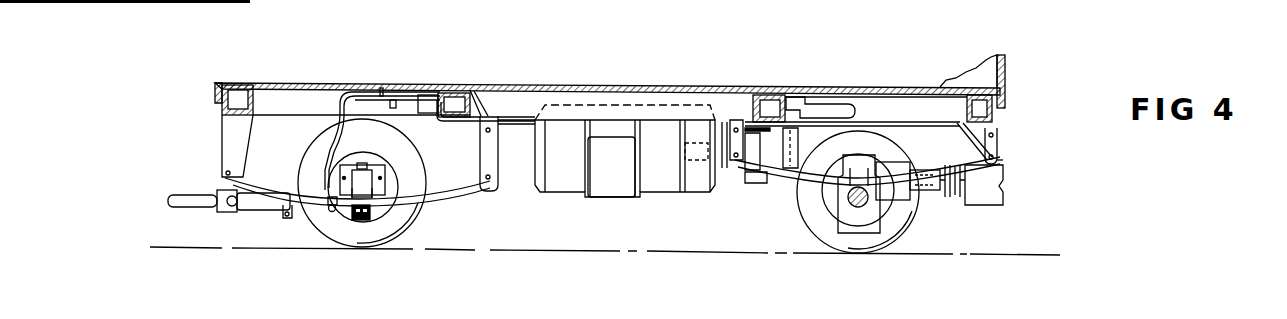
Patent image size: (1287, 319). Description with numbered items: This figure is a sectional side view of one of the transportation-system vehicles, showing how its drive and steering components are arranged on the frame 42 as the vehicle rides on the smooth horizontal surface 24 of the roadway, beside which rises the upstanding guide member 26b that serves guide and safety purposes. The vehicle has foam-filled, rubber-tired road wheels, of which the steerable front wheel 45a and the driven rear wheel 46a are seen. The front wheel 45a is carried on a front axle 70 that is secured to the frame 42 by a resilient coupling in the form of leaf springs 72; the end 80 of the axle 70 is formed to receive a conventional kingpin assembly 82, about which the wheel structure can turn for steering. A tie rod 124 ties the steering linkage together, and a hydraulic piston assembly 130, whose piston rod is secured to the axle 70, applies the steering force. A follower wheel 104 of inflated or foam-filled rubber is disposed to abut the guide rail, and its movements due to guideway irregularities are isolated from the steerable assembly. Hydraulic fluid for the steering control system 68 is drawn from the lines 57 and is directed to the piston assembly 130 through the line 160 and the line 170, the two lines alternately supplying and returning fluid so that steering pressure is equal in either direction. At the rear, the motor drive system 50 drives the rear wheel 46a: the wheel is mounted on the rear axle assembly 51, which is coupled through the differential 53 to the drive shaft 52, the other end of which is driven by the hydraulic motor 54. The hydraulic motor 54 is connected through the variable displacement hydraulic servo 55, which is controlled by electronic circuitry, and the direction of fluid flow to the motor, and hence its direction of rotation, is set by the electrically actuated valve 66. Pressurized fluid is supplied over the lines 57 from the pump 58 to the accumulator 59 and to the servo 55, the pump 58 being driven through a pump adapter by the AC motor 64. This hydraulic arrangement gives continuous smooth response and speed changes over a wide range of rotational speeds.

The upstanding guide member 26b is at (256, 3).
The frame 42 is at (718, 88).
The steering control system 68 is at (428, 95).
The lines 57 is at (507, 127).
The line 160 is at (373, 100).
The line 170 is at (393, 106).
The front wheel 45a is at (390, 223).
The end of axle 80 is at (388, 175).
The kingpin assembly 82 is at (362, 166).
The front axle 70 is at (360, 222).
The leaf springs 72 is at (460, 193).
The follower wheel 104 is at (173, 197).
The tie rod 124 is at (288, 212).
The hydraulic piston assembly 130 is at (328, 221).
The smooth horizontal surface 24 is at (535, 250).
The motor drive system 50 is at (728, 213).
The AC motor 64 is at (632, 164).
The pump 58 is at (733, 178).
The accumulator 59 is at (812, 108).
The rear wheel 46a is at (900, 235).
The rear axle assembly 51 is at (848, 203).
The differential 53 is at (885, 165).
The drive shaft 52 is at (930, 192).
The hydraulic motor 54 is at (960, 196).
The variable displacement hydraulic servo 55 is at (1003, 192).
The electrically actuated valve 66 is at (998, 155).